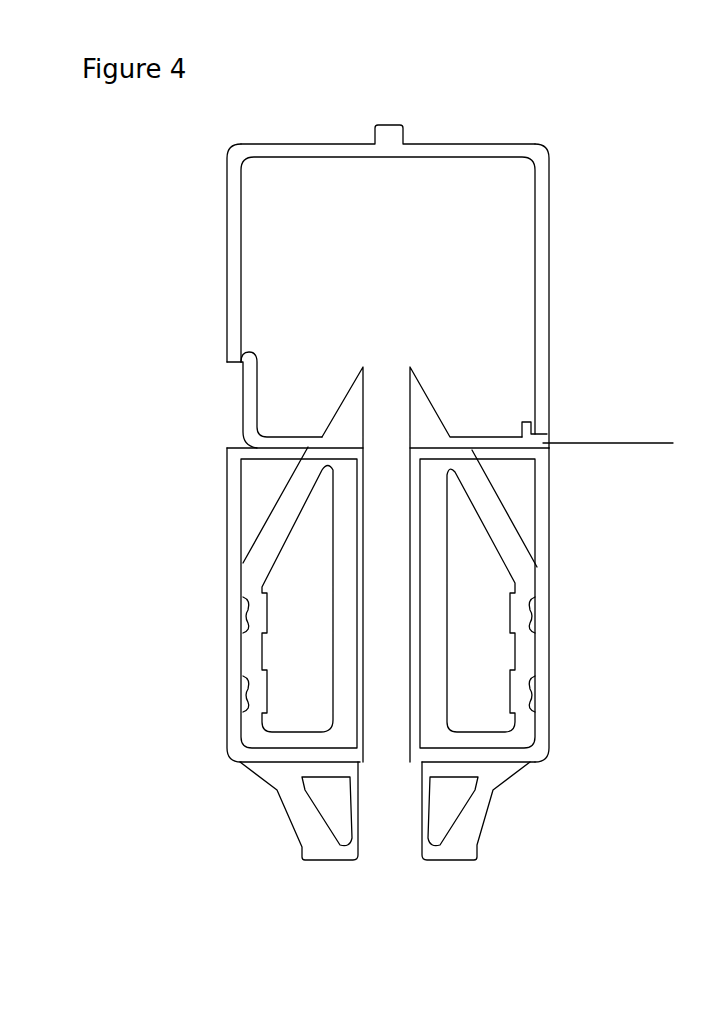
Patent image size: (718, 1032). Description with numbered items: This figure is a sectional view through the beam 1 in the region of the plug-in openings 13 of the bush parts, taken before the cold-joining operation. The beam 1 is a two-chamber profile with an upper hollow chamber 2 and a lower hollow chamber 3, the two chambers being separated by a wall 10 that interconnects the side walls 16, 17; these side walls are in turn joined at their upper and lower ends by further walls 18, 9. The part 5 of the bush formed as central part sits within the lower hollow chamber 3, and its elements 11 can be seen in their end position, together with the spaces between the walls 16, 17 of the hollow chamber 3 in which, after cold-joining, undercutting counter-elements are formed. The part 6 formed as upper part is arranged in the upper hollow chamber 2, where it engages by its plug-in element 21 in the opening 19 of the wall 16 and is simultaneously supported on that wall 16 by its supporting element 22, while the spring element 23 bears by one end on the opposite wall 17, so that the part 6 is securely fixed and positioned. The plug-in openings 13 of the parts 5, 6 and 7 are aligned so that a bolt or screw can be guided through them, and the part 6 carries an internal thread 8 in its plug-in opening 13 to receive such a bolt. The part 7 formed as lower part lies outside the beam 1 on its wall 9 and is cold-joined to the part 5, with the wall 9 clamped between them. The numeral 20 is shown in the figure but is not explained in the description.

The beam 1 is at (535, 82).
The upper hollow chamber 2 is at (462, 254).
The lower hollow chamber 3 is at (251, 478).
The part formed as central part 5 is at (427, 630).
The part formed as upper part 6 is at (352, 405).
The part formed as lower part 7 is at (300, 823).
The internal thread 8 is at (410, 422).
The wall 9 is at (277, 753).
The wall 10 is at (280, 465).
The elements 11 is at (256, 613).
The plug-in openings 13 is at (385, 364).
The wall 16 is at (550, 287).
The wall 17 is at (228, 213).
The wall 18 is at (335, 146).
The opening 19 is at (575, 427).
The recess 20 is at (184, 414).
The plug-in element 21 is at (630, 443).
The supporting element 22 is at (530, 425).
The spring element 23 is at (255, 393).